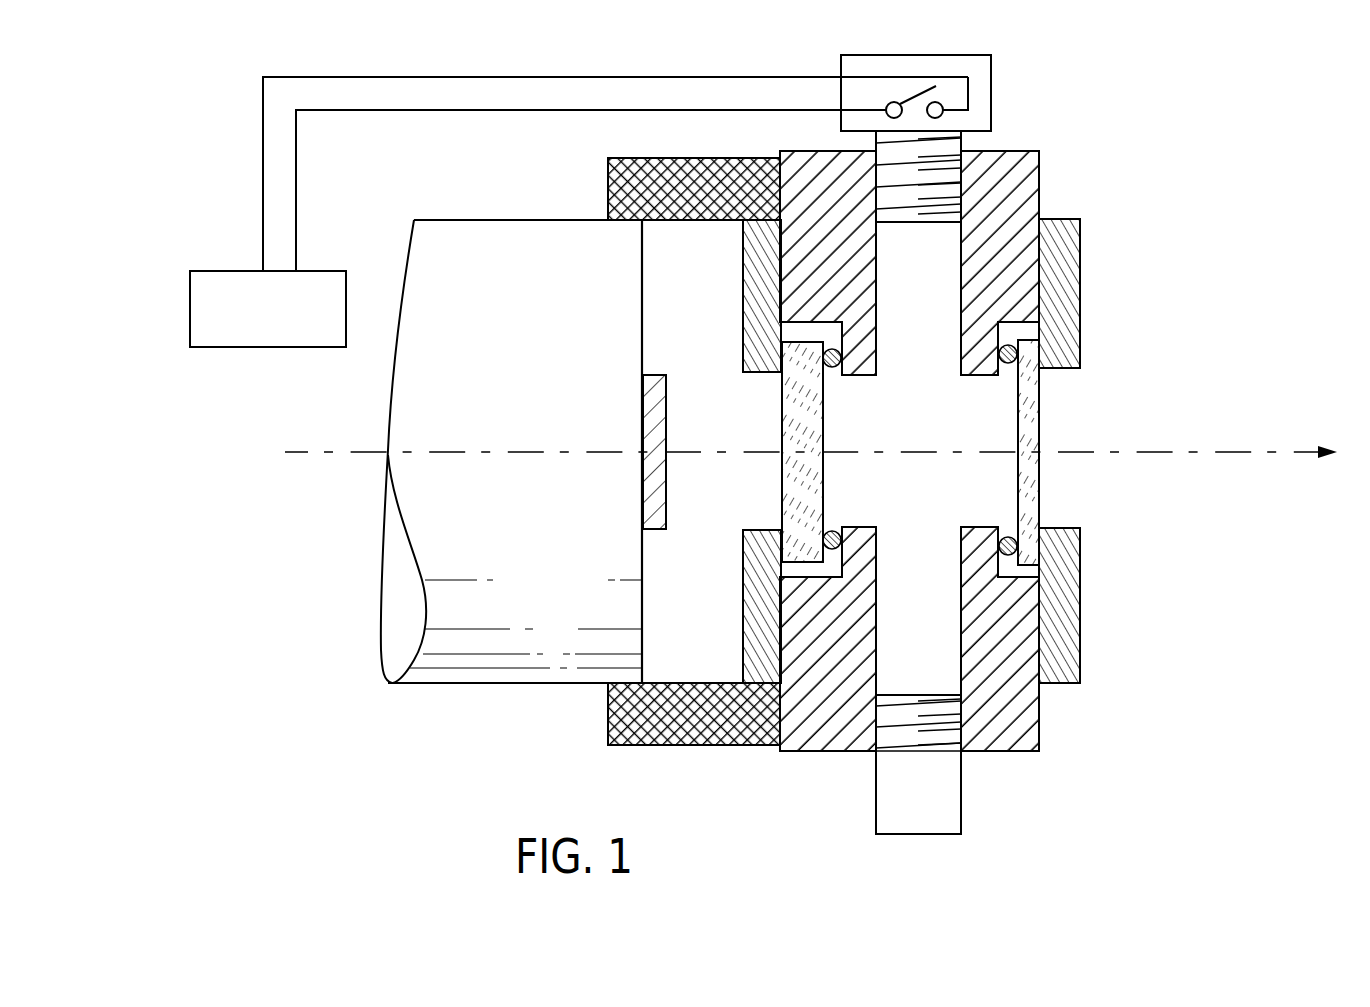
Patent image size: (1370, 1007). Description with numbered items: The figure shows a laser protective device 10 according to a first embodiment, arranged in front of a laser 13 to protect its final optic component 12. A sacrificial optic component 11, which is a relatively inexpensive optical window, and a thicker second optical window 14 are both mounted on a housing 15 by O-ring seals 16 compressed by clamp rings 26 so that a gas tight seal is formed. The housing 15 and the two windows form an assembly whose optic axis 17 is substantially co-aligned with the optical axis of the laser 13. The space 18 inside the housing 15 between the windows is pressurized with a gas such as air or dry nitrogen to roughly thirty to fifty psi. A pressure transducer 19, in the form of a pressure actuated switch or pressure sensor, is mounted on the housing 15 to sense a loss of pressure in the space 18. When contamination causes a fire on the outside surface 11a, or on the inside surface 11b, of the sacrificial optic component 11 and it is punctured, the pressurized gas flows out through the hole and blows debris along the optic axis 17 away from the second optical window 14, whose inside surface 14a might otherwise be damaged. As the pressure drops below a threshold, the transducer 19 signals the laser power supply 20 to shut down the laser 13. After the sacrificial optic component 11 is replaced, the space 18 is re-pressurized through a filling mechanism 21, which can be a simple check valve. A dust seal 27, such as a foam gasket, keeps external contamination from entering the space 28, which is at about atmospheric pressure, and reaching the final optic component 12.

The laser protective device 10 is at (1022, 428).
The sacrificial optic component 11 is at (1032, 402).
The outside surface of the sacrificial optic component 11a is at (1040, 485).
The inside surface of the sacrificial optic component 11b is at (1018, 445).
The final optic component 12 is at (655, 385).
The laser 13 is at (527, 665).
The second optical window 14 is at (795, 388).
The inside surface of the second optical window 14a is at (823, 500).
The housing 15 is at (1030, 162).
The O-ring seals 16 is at (1005, 538).
The optic axis 17 is at (1232, 452).
The space 18 is at (945, 494).
The pressure transducer 19 is at (975, 70).
The laser power supply 20 is at (320, 305).
The filling mechanism 21 is at (942, 803).
The clamp rings 26 is at (755, 585).
The dust seal 27 is at (640, 185).
The space 28 is at (747, 499).